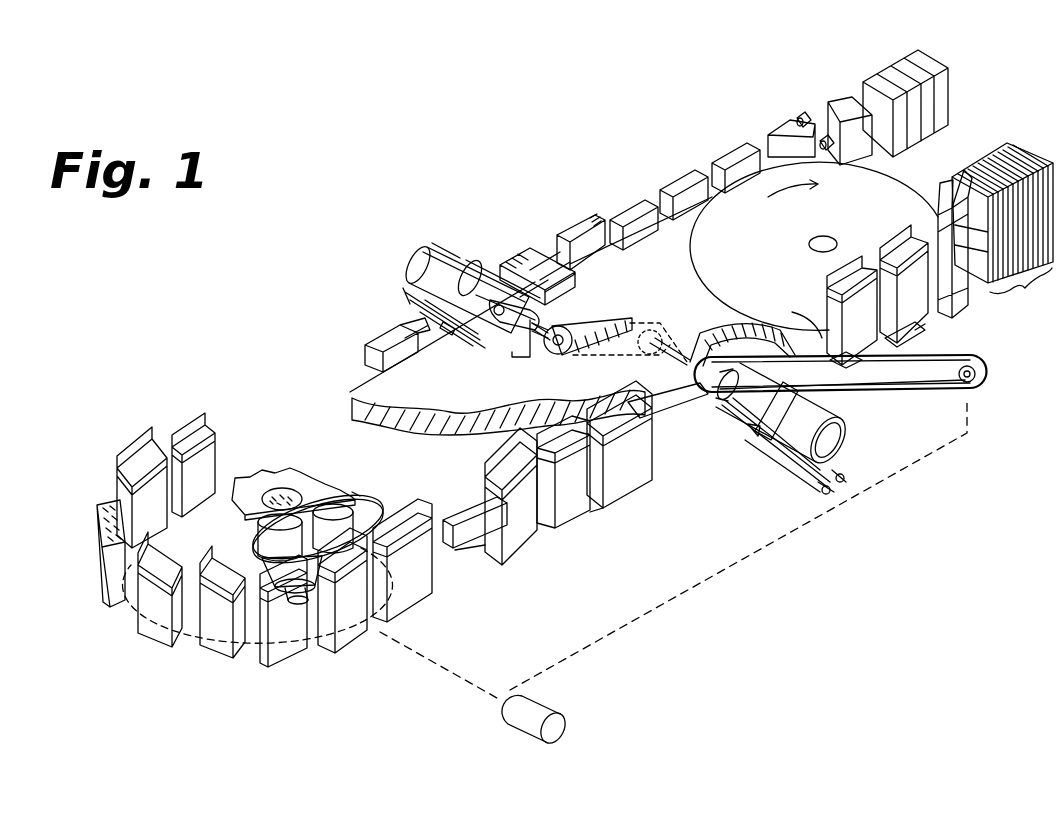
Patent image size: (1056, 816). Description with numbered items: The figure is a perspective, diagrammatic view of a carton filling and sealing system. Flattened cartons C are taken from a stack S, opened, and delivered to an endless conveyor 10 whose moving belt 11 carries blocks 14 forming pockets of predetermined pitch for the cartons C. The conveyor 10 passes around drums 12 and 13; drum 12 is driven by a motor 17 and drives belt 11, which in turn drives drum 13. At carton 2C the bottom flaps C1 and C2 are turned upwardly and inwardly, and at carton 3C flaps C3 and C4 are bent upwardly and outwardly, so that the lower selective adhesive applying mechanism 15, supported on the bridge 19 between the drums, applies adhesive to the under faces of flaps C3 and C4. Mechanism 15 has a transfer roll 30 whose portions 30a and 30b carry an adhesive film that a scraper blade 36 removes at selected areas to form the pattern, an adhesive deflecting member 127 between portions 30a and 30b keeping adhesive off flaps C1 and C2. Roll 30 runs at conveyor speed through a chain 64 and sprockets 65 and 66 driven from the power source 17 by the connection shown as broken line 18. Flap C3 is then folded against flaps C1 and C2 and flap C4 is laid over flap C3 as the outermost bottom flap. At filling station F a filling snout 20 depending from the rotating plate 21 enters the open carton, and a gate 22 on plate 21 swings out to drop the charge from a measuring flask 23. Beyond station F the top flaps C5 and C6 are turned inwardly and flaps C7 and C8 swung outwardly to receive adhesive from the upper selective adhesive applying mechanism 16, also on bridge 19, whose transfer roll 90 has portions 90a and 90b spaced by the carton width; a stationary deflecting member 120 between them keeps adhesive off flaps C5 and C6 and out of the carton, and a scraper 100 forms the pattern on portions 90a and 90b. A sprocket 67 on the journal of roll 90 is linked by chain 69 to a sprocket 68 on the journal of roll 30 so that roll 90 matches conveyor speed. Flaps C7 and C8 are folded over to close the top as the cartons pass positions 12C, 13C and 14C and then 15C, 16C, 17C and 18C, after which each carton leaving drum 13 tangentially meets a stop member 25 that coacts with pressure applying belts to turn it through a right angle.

The endless conveyor 10 is at (587, 558).
The moving belt 11 is at (460, 547).
The drum 12 is at (247, 483).
The drum 13 is at (890, 178).
The blocks 14 is at (545, 513).
The lower selective adhesive applying mechanism 15 is at (880, 425).
The upper selective adhesive applying mechanism 16 is at (401, 248).
The motor 17 is at (547, 705).
The broken line 18 is at (742, 560).
The bridge 19 is at (352, 408).
The filling snout 20 is at (343, 563).
The rotating plate 21 is at (367, 527).
The gate 22 is at (303, 582).
The measuring flask 23 is at (300, 534).
The stop member 25 is at (826, 152).
The transfer roll 30 is at (752, 397).
The portion of transfer roll 30a is at (790, 434).
The portion of transfer roll 30b is at (735, 402).
The scraper blade 36 is at (810, 463).
The chain 64 is at (907, 400).
The sprocket 65 is at (697, 378).
The sprocket 66 is at (977, 387).
The sprocket 67 is at (563, 356).
The sprocket 68 is at (663, 333).
The chain 69 is at (620, 320).
The transfer roll 90 is at (443, 250).
The portion of transfer roll 90a is at (460, 256).
The portion of transfer roll 90b is at (497, 330).
The scraper 100 is at (428, 287).
The stationary deflecting member 120 is at (483, 267).
The adhesive deflecting member 127 is at (768, 428).
The carton position 12C is at (570, 228).
The carton position 13C is at (627, 207).
The carton position 14C is at (680, 187).
The station 15C is at (730, 157).
The station 16C is at (783, 132).
The station 17C is at (840, 98).
The station 18C carton stack 18C is at (882, 82).
The carton position 2C is at (926, 302).
The carton position 3C is at (868, 334).
The cartons C is at (957, 277).
The bottom flap C1 is at (912, 347).
The bottom flap C2 is at (925, 327).
The bottom flap C3 is at (617, 540).
The bottom flap C4 is at (858, 366).
The top flap C5 is at (532, 288).
The top flap C6 is at (572, 268).
The top flap C7 is at (597, 237).
The top flap C8 is at (584, 213).
The stack S is at (1002, 222).
The filling station F is at (360, 500).